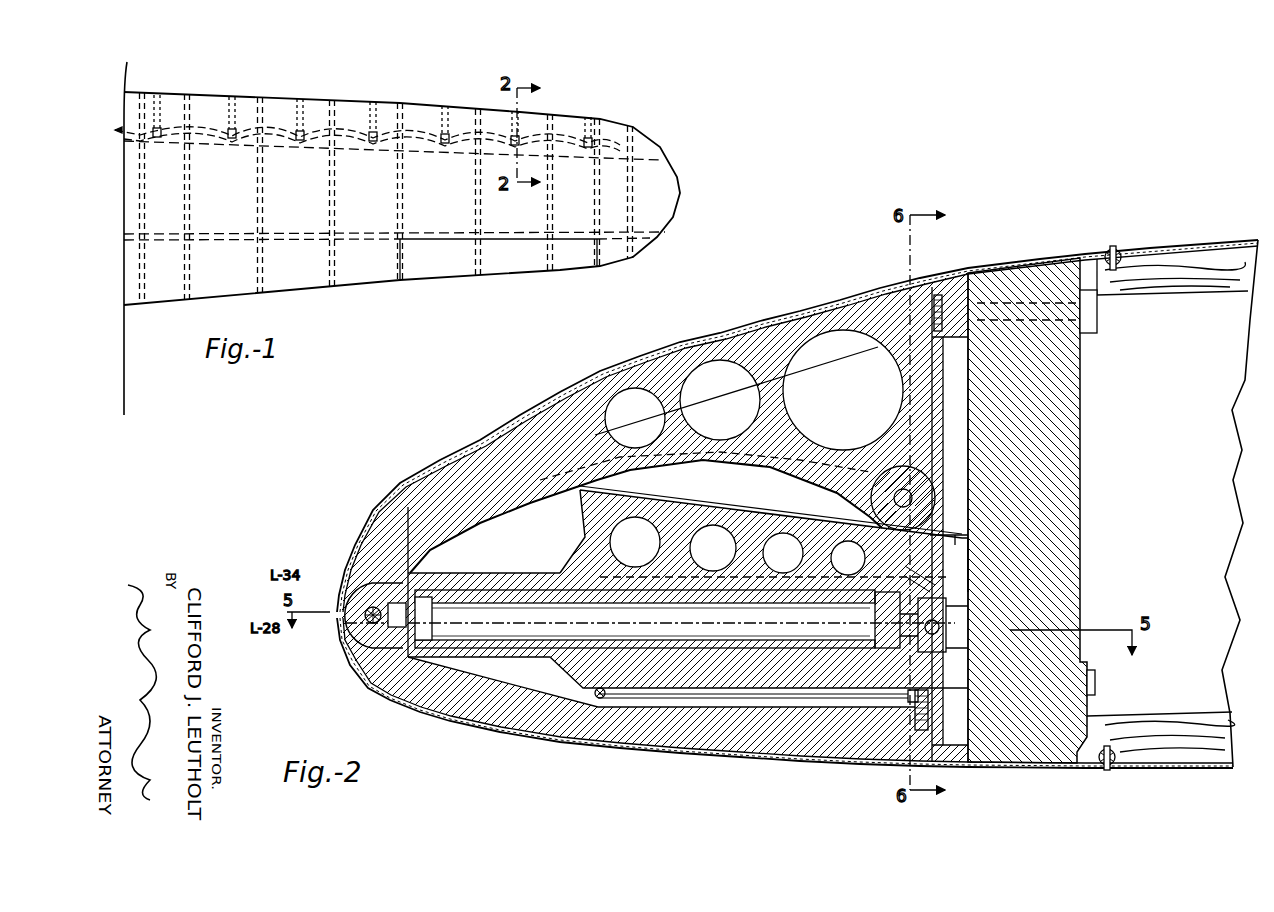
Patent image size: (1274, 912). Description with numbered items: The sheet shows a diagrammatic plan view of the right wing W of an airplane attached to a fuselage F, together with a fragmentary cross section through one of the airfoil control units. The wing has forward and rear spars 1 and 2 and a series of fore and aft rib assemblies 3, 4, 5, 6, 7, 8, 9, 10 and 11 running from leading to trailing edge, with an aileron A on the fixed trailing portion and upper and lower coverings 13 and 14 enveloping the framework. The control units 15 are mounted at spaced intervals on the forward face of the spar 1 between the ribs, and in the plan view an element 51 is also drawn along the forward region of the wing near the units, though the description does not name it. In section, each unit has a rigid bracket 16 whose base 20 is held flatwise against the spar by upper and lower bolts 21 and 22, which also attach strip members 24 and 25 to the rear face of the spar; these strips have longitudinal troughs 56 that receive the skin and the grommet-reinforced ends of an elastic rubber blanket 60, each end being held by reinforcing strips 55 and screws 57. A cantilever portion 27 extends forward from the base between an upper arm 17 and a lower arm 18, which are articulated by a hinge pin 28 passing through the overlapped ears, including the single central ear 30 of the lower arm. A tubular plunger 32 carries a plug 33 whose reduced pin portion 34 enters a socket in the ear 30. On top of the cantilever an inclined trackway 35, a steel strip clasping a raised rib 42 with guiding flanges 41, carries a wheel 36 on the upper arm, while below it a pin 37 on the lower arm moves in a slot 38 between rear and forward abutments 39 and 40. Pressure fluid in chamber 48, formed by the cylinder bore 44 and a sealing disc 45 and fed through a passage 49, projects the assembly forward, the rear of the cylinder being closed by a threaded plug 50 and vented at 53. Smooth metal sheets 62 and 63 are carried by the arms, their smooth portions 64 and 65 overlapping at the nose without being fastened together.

In FIG. 1, the forward spar 1 is at (320, 152).
In FIG. 2, the forward spar 1 is at (1062, 462).
In FIG. 1, the rear spar 2 is at (308, 245).
In FIG. 1, the rib assembly 3 is at (150, 228).
In FIG. 1, the rib assembly 4 is at (196, 226).
In FIG. 1, the rib assembly 5 is at (268, 224).
In FIG. 1, the rib assembly 6 is at (336, 200).
In FIG. 1, the rib assembly 7 is at (404, 202).
In FIG. 1, the rib assembly 8 is at (483, 218).
In FIG. 1, the rib assembly 9 is at (553, 212).
In FIG. 2, the rib assembly 9 is at (838, 336).
In FIG. 1, the rib assembly 10 is at (600, 226).
In FIG. 1, the rib assembly 11 is at (636, 228).
In FIG. 2, the upper covering 13 is at (1168, 242).
In FIG. 2, the lower covering 14 is at (1162, 770).
In FIG. 1, the airfoil control unit 15 is at (160, 105).
In FIG. 2, the bracket member 16 is at (946, 540).
In FIG. 2, the upper movable arm member 17 is at (752, 328).
In FIG. 2, the lower movable arm member 18 is at (641, 730).
In FIG. 2, the attaching base 20 is at (958, 425).
In FIG. 2, the upper bolt 21 is at (1100, 326).
In FIG. 2, the lower bolt 22 is at (1095, 690).
In FIG. 2, the upper strip member 24 is at (1125, 298).
In FIG. 2, the lower strip member 25 is at (1100, 742).
In FIG. 2, the cantilever bracket portion 27 is at (688, 672).
In FIG. 2, the hinge pin 28 is at (348, 650).
In FIG. 2, the ear portion 30 is at (348, 614).
In FIG. 2, the plunger 32 is at (500, 590).
In FIG. 2, the plug 33 is at (442, 573).
In FIG. 2, the pin portion 34 is at (388, 600).
In FIG. 2, the inclined trackway 35 is at (733, 515).
In FIG. 2, the wheel 36 is at (925, 497).
In FIG. 2, the pin 37 is at (913, 690).
In FIG. 2, the longitudinal slot 38 is at (838, 692).
In FIG. 2, the rear limiting abutment 39 is at (950, 708).
In FIG. 2, the forward limiting abutment 40 is at (598, 700).
In FIG. 2, the upstanding flange 41 is at (663, 501).
In FIG. 2, the raised rib 42 is at (772, 535).
In FIG. 2, the cylinder bore 44 is at (748, 605).
In FIG. 2, the sealing disc 45 is at (872, 622).
In FIG. 2, the pressure chamber 48 is at (955, 610).
In FIG. 2, the passage 49 is at (946, 625).
In FIG. 2, the threaded plug 50 is at (950, 640).
In FIG. 1, the cable 51 is at (200, 122).
In FIG. 2, the air vent 53 is at (962, 580).
In FIG. 2, the grommet reinforcing strip 55 is at (1106, 248).
In FIG. 2, the longitudinal trough 56 is at (1145, 272).
In FIG. 2, the screw 57 is at (1115, 248).
In FIG. 2, the elastic cover blanket 60 is at (1002, 265).
In FIG. 2, the upper metal sheet 62 is at (645, 356).
In FIG. 2, the lower metal sheet 63 is at (772, 760).
In FIG. 2, the smooth portion of upper plate 64 is at (352, 598).
In FIG. 2, the smooth portion of lower plate 65 is at (350, 632).
In FIG. 1, the aileron A is at (452, 276).
In FIG. 1, the wing W is at (362, 285).
In FIG. 2, the wing W is at (1209, 503).
In FIG. 1, the fuselage F is at (126, 370).